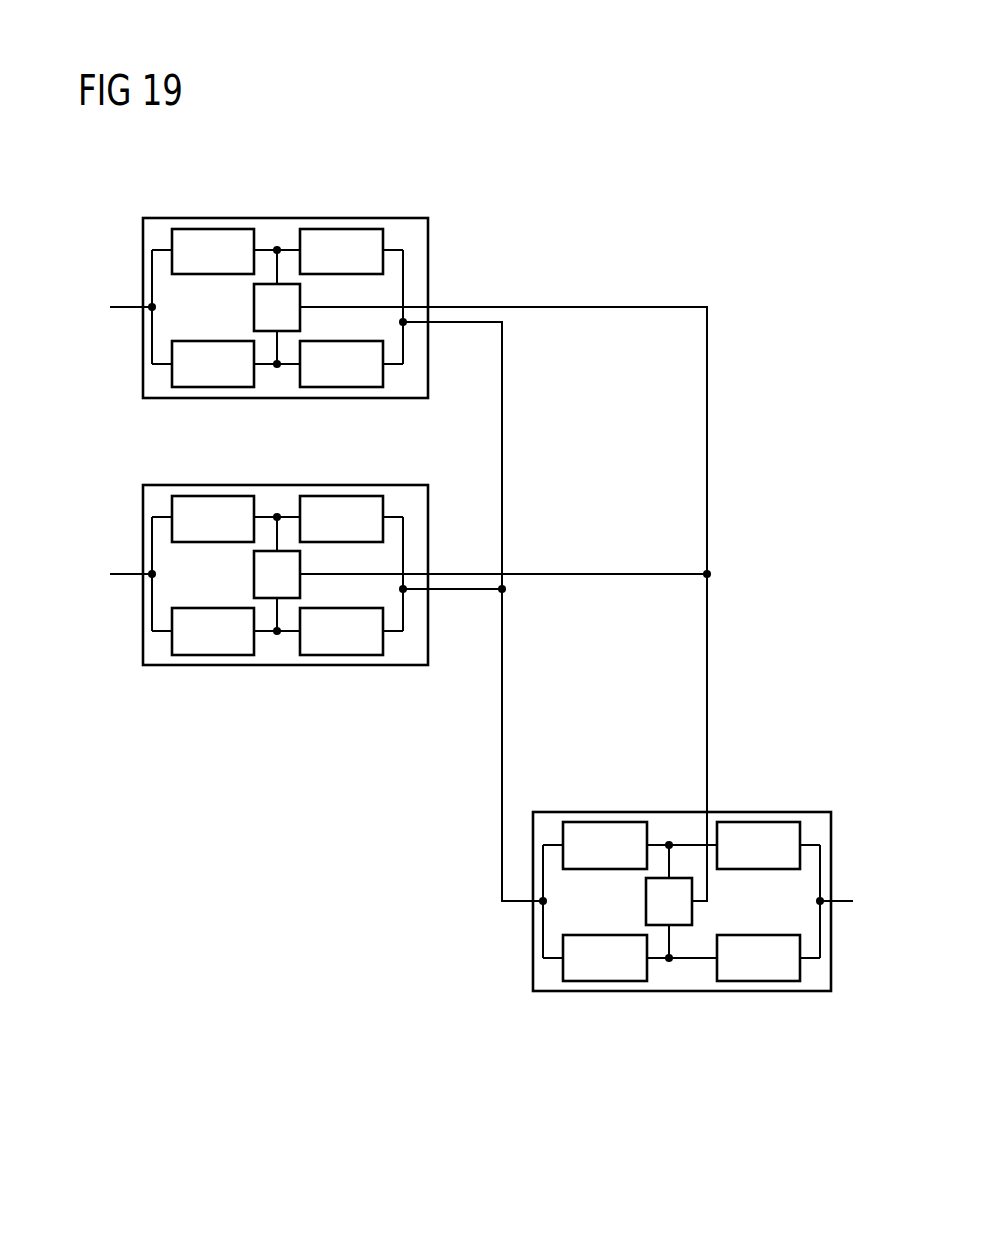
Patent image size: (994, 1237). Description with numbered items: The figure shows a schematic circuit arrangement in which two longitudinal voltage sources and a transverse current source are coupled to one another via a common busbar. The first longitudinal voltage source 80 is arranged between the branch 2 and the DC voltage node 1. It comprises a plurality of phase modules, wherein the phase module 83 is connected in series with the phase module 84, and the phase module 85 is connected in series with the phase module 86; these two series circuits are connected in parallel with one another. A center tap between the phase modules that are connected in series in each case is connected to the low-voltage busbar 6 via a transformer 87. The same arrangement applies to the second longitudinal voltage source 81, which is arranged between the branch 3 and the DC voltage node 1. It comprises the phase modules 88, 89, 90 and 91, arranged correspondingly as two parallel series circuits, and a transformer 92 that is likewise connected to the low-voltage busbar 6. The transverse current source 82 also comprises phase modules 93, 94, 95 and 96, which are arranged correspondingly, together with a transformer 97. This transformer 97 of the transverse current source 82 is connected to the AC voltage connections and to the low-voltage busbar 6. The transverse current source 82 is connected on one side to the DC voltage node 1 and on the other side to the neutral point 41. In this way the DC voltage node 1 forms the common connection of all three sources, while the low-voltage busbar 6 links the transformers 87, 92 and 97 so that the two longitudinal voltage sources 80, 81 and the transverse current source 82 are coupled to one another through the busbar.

The DC voltage node 1 is at (502, 424).
The branch 2 is at (124, 307).
The branch 3 is at (124, 574).
The low-voltage busbar 6 is at (707, 475).
The neutral point 41 is at (853, 901).
The longitudinal voltage source 80 is at (396, 218).
The longitudinal voltage source 81 is at (417, 485).
The transverse current source 82 is at (559, 991).
The phase module 83 is at (229, 218).
The phase module 84 is at (335, 218).
The phase module 85 is at (203, 387).
The phase module 86 is at (330, 387).
The transformer 87 is at (254, 312).
The phase module 88 is at (241, 485).
The phase module 89 is at (369, 485).
The phase module 90 is at (217, 655).
The phase module 91 is at (349, 655).
The transformer 92 is at (254, 580).
The phase module 93 is at (600, 812).
The phase module 94 is at (763, 812).
The phase module 95 is at (610, 981).
The phase module 96 is at (760, 981).
The transformer 97 is at (646, 902).